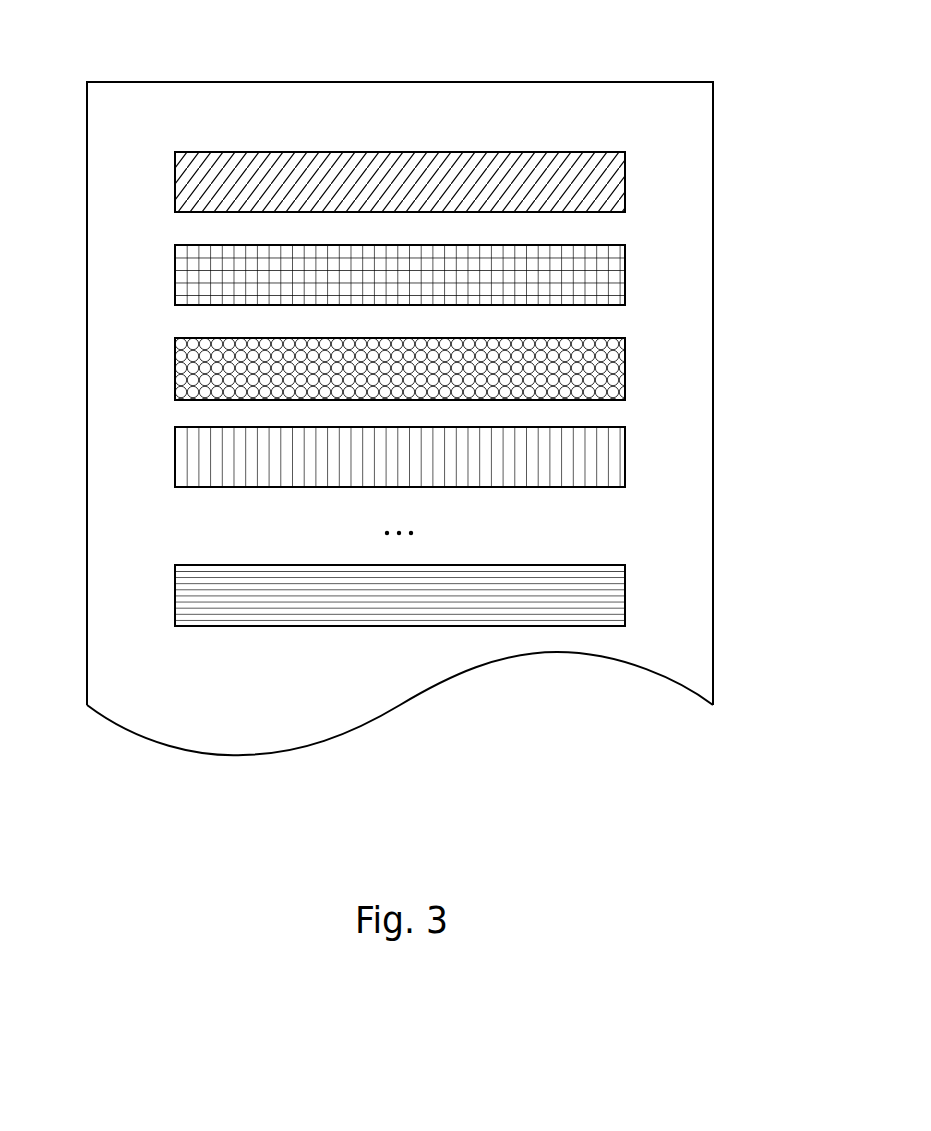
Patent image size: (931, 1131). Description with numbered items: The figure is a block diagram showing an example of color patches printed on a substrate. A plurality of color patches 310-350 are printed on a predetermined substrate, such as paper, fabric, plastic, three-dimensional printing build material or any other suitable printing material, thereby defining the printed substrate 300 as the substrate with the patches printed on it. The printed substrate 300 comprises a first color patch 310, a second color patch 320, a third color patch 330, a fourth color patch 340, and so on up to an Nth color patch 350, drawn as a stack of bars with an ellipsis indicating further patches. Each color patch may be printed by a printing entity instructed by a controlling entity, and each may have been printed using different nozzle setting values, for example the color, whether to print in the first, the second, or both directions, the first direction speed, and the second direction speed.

The printed substrate 300 is at (131, 82).
The first color patch 310 is at (625, 184).
The second color patch 320 is at (625, 277).
The third color patch 330 is at (625, 371).
The fourth color patch 340 is at (625, 459).
The Nth color patch 350 is at (625, 597).